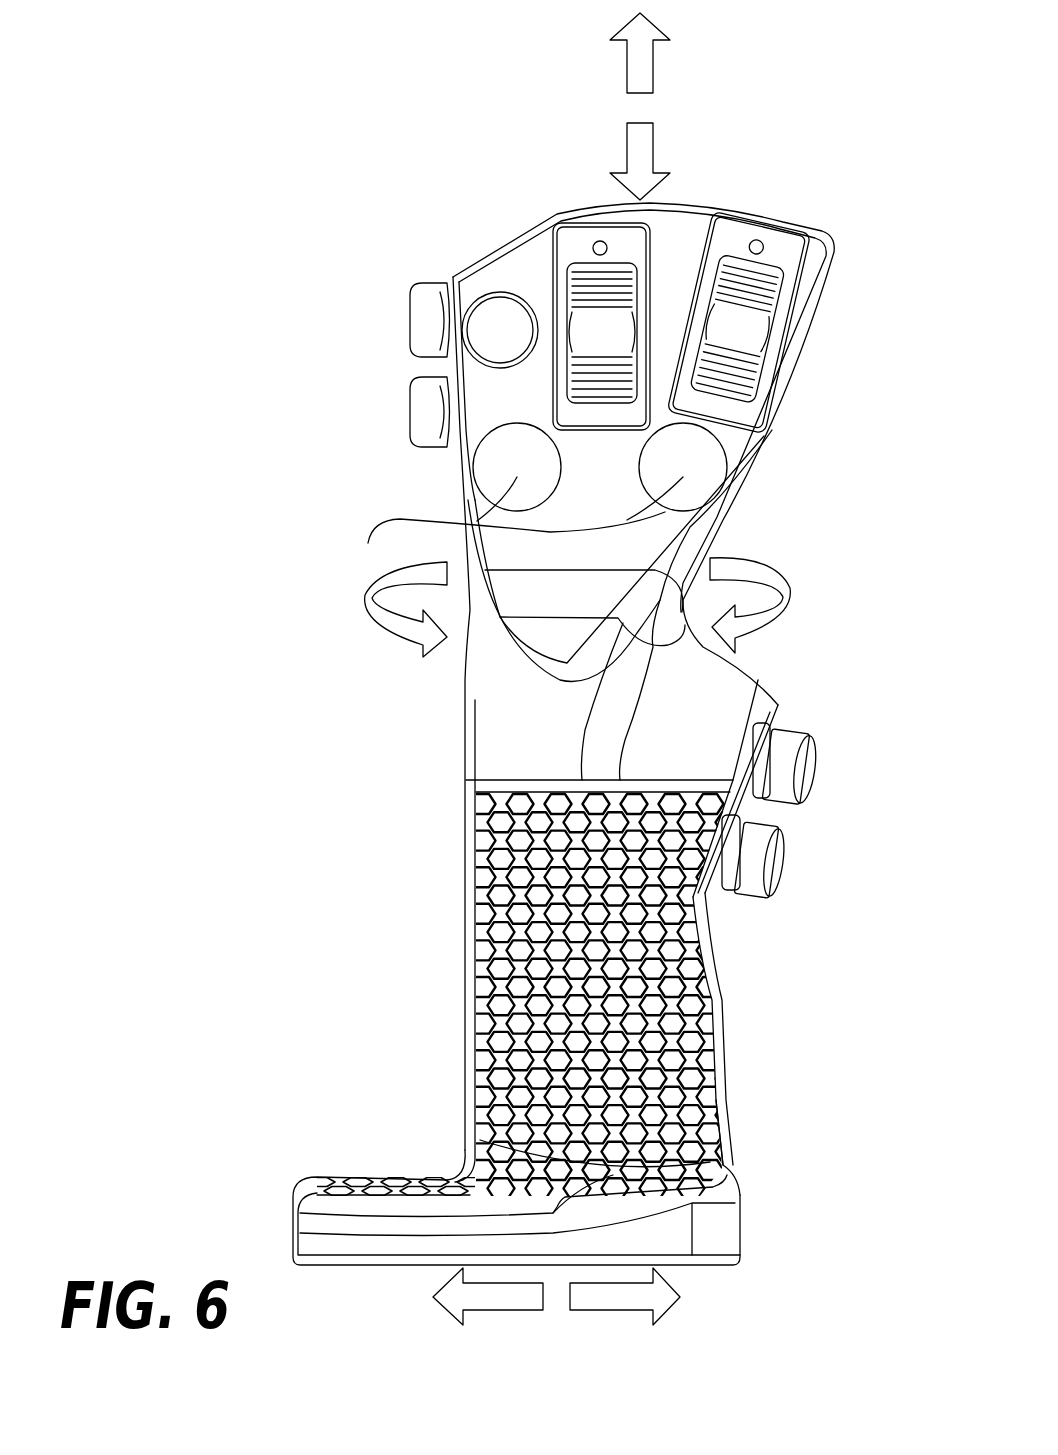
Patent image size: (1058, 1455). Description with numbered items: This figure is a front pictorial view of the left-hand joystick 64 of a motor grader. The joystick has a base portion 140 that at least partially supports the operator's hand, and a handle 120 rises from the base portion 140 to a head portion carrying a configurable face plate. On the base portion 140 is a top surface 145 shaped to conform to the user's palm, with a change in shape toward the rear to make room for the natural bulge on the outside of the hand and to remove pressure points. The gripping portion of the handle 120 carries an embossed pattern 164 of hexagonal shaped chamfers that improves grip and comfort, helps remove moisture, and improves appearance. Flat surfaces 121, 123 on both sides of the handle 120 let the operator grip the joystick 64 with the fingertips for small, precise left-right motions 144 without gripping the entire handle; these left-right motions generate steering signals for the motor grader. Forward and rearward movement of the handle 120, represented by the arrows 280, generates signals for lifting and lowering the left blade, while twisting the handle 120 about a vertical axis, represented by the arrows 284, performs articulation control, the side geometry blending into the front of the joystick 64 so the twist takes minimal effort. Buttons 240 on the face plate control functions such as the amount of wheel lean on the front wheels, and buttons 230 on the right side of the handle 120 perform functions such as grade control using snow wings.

The left-hand joystick 64 is at (372, 352).
The handle 120 is at (670, 1028).
The flat surface 121 is at (727, 1127).
The flat surface 123 is at (473, 1093).
The base portion 140 is at (672, 1245).
The left-right motions 144 is at (667, 1318).
The top surface 145 is at (398, 1178).
The embossed pattern 164 is at (527, 1013).
The buttons 230 is at (772, 870).
The buttons 240 is at (475, 525).
The arrows 280 is at (663, 108).
The arrows 284 is at (782, 560).